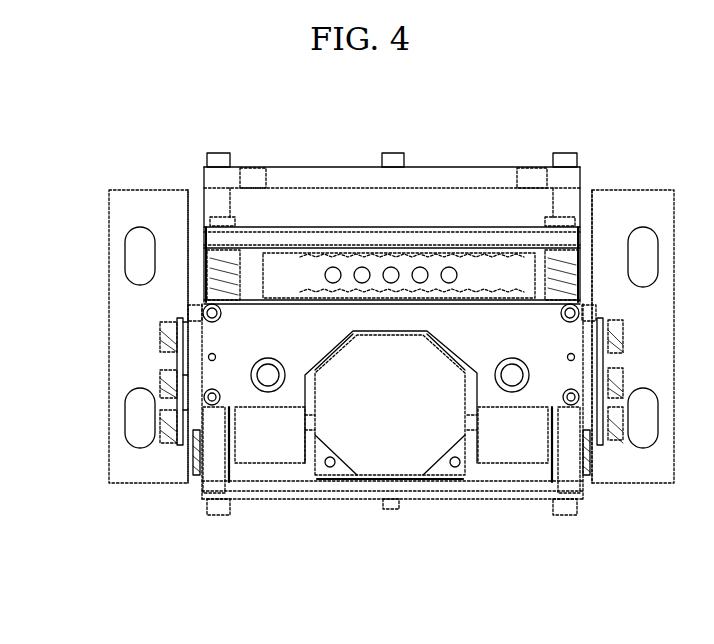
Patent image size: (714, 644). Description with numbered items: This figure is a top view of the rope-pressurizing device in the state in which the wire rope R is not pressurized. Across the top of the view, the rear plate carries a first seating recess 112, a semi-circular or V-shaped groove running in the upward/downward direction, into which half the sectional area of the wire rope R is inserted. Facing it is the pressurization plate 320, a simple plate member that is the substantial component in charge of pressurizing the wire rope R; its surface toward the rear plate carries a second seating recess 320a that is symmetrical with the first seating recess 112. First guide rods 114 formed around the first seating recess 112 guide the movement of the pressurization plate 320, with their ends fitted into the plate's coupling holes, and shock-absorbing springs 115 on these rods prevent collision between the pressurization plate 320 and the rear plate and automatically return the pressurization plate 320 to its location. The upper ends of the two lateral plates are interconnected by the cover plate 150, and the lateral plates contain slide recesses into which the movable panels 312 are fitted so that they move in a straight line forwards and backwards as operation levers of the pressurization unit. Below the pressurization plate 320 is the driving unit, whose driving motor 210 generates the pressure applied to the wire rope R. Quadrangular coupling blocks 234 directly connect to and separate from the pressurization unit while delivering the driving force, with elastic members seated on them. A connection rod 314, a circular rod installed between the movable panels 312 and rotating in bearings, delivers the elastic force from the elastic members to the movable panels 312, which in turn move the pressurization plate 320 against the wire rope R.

The first seating recess 112 is at (295, 278).
The first guide rods 114 is at (185, 292).
The shock-absorbing springs 115 is at (190, 255).
The cover plate 150 is at (517, 465).
The driving motor 210 is at (407, 448).
The coupling blocks 234 is at (278, 452).
The movable panels 312 is at (245, 475).
The connection rod 314 is at (305, 492).
The pressurization plate 320 is at (340, 245).
The second seating recess 320a is at (403, 260).
The wire rope R is at (450, 258).